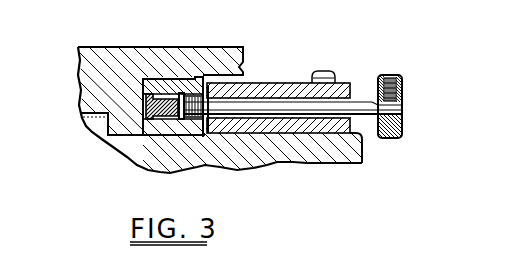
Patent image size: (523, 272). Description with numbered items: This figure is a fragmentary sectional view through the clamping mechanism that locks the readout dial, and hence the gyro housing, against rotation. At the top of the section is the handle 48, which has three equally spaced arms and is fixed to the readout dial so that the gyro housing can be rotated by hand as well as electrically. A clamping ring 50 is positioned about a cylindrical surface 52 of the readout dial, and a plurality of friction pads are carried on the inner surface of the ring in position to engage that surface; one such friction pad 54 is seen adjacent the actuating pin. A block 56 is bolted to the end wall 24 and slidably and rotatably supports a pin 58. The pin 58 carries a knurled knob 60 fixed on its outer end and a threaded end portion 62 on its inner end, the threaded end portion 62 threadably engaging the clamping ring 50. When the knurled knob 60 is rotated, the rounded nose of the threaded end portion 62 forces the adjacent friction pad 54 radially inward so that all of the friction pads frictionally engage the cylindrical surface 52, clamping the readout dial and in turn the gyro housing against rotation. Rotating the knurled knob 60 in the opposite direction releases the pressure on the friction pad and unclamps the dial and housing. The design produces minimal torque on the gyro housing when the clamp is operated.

The end wall 24 is at (287, 153).
The handle 48 is at (138, 49).
The clamping ring 50 is at (167, 87).
The cylindrical surface 52 is at (153, 122).
The friction pad 54 is at (142, 107).
The block 56 is at (259, 83).
The pin 58 is at (303, 100).
The knurled knob 60 is at (401, 92).
The threaded end portion 62 is at (194, 120).